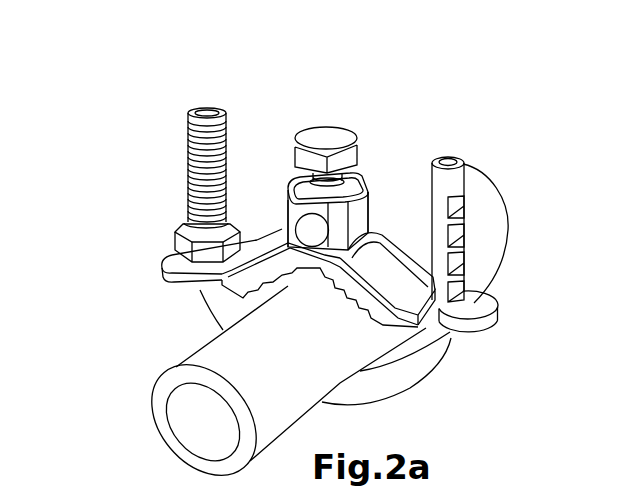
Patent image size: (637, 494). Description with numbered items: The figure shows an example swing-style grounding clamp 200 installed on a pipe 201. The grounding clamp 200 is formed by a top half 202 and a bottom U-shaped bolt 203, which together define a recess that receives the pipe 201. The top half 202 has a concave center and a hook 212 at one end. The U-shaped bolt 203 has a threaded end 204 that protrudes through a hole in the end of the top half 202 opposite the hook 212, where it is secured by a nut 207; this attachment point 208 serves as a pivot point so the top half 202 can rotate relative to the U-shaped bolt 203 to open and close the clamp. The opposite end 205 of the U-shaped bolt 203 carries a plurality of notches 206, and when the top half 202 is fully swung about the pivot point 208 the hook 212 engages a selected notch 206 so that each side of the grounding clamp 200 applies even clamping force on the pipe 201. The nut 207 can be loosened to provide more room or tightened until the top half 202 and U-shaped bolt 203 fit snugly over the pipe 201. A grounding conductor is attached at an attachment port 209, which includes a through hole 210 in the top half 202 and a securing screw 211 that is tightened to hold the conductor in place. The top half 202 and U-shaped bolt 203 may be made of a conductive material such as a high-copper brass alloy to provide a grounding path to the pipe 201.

The grounding clamp 200 is at (397, 108).
The pipe 201 is at (508, 212).
The top half 202 is at (412, 237).
The bottom U-shaped bolt 203 is at (455, 375).
The threaded end 204 is at (188, 153).
The opposite end 205 is at (456, 162).
The notches 206 is at (452, 265).
The nut 207 is at (183, 228).
The attachment point 208 is at (140, 250).
The attachment port 209 is at (281, 163).
The through hole 210 is at (268, 157).
The securing screw 211 is at (347, 109).
The hook 212 is at (480, 303).